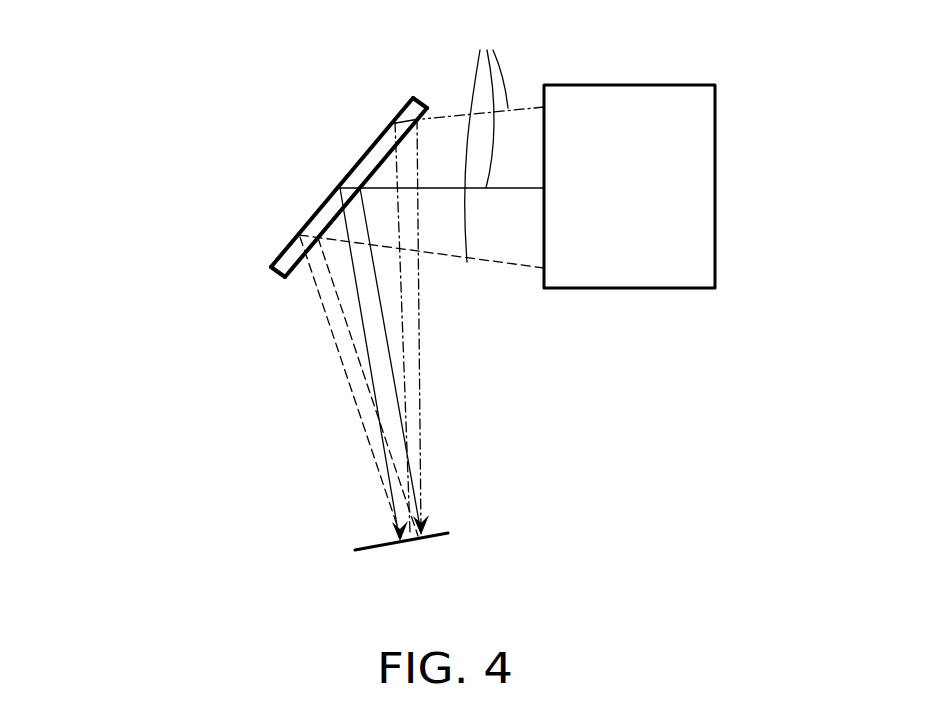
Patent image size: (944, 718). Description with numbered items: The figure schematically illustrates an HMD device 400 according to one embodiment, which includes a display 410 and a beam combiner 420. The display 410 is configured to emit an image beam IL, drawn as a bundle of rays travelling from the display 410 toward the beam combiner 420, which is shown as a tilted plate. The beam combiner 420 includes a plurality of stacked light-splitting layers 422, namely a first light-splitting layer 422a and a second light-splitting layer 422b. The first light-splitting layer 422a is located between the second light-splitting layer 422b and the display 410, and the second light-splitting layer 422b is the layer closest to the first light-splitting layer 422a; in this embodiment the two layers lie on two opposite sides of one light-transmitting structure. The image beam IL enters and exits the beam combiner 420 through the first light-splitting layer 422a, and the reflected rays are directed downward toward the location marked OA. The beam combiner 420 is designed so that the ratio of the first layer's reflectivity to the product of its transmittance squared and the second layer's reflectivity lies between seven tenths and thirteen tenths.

The HMD device 400 is at (768, 570).
The display 410 is at (703, 200).
The image beam IL is at (486, 140).
The beam combiner 420 is at (257, 269).
The stacked light-splitting layers 422 is at (257, 268).
The first light-splitting layer 422a is at (295, 277).
The second light-splitting layer 422b is at (282, 278).
The optical axis / target plane OA is at (453, 532).